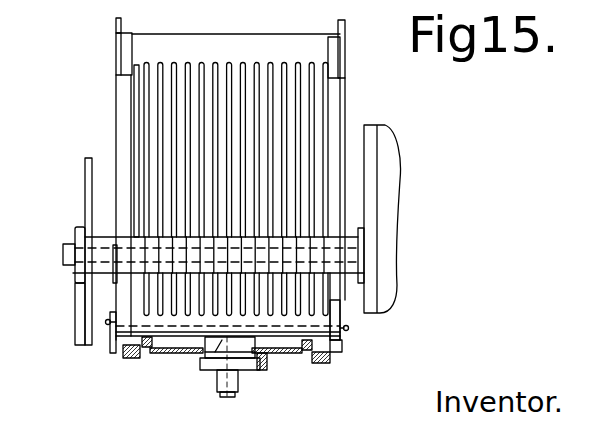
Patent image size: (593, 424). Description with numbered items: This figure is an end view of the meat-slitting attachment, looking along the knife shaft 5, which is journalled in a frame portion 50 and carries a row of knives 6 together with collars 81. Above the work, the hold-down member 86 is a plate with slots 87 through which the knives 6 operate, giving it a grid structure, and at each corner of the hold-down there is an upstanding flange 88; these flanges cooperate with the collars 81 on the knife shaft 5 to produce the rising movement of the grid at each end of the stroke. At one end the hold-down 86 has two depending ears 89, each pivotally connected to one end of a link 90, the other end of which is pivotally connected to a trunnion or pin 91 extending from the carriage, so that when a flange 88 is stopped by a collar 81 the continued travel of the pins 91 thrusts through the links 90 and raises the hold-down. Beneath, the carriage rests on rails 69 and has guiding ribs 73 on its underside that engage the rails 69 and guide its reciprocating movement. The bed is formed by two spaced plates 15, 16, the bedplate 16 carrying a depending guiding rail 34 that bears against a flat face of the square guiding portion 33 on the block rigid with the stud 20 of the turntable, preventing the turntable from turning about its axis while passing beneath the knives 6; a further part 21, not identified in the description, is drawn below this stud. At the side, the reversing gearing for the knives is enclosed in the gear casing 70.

The hold-down member 86 is at (203, 45).
The upstanding flange 88 is at (116, 45).
The slots 87 is at (132, 117).
The knives 6 is at (325, 212).
The collars 81 is at (100, 240).
The knife shaft 5 is at (105, 263).
The frame portion 50 is at (85, 175).
The gear casing 70 is at (393, 190).
The link 90 is at (105, 345).
The depending ears 89 is at (118, 360).
The trunnions or pins 91 is at (106, 321).
The guiding ribs 73 is at (137, 352).
The rails 69 is at (144, 348).
The bedplate 16 is at (316, 363).
The plate 15 is at (182, 353).
The flat-sided guiding portion 33 is at (250, 372).
The depending guiding rail 34 is at (268, 368).
The nut 21 is at (215, 373).
The stud 20 is at (222, 340).